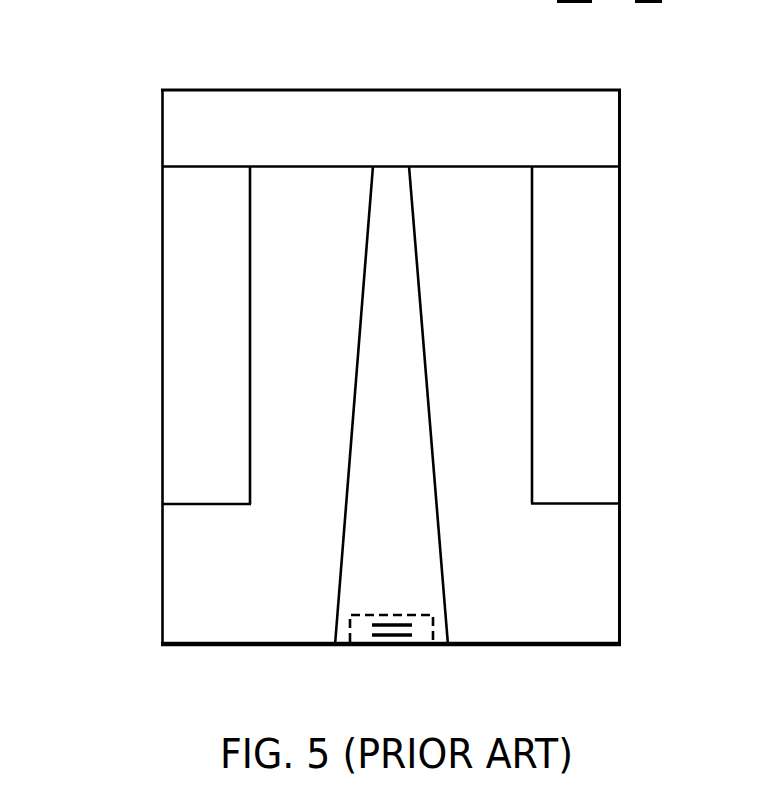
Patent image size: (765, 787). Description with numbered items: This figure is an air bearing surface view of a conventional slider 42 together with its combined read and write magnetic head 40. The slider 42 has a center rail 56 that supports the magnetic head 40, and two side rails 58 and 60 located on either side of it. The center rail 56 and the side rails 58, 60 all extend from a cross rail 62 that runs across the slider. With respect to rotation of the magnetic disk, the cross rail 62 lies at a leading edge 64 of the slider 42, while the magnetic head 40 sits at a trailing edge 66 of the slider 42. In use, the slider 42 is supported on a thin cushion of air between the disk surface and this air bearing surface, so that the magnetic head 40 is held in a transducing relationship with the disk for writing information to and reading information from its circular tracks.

The slider 42 is at (148, 588).
The cross rail 62 is at (300, 97).
The leading edge 64 is at (461, 89).
The side rail 58 is at (175, 241).
The side rail 60 is at (593, 240).
The center rail 56 is at (378, 281).
The magnetic head 40 is at (362, 650).
The trailing edge 66 is at (515, 647).